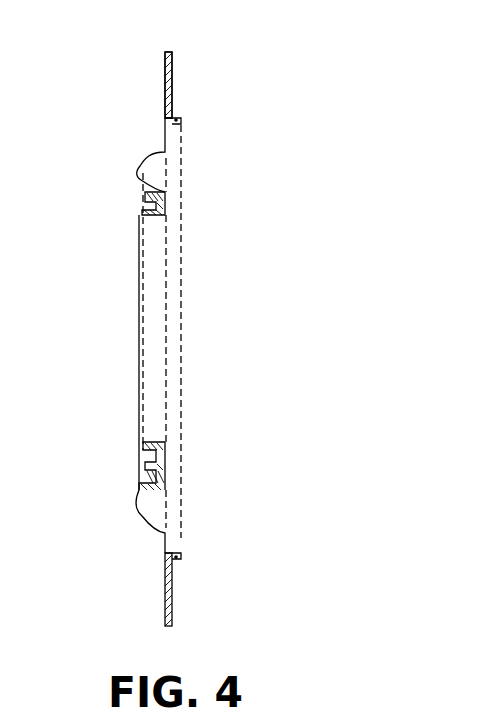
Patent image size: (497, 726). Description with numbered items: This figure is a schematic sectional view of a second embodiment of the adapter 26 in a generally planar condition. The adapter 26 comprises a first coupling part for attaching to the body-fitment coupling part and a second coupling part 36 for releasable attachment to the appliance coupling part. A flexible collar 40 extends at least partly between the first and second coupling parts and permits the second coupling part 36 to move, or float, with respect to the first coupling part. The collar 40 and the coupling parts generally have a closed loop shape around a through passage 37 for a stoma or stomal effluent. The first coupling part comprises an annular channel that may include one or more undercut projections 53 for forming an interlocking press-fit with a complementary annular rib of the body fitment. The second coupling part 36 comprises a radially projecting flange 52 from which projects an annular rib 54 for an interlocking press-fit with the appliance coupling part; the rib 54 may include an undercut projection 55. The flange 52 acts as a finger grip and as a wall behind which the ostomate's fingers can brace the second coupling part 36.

The adapter 26 is at (102, 421).
The second coupling part 36 is at (160, 105).
The radially projecting flange 52 is at (173, 80).
The annular rib 54 is at (178, 121).
The undercut projection 55 is at (177, 557).
The flexible collar 40 is at (140, 164).
The undercut projection 53 is at (143, 201).
The through passage 37 is at (152, 327).